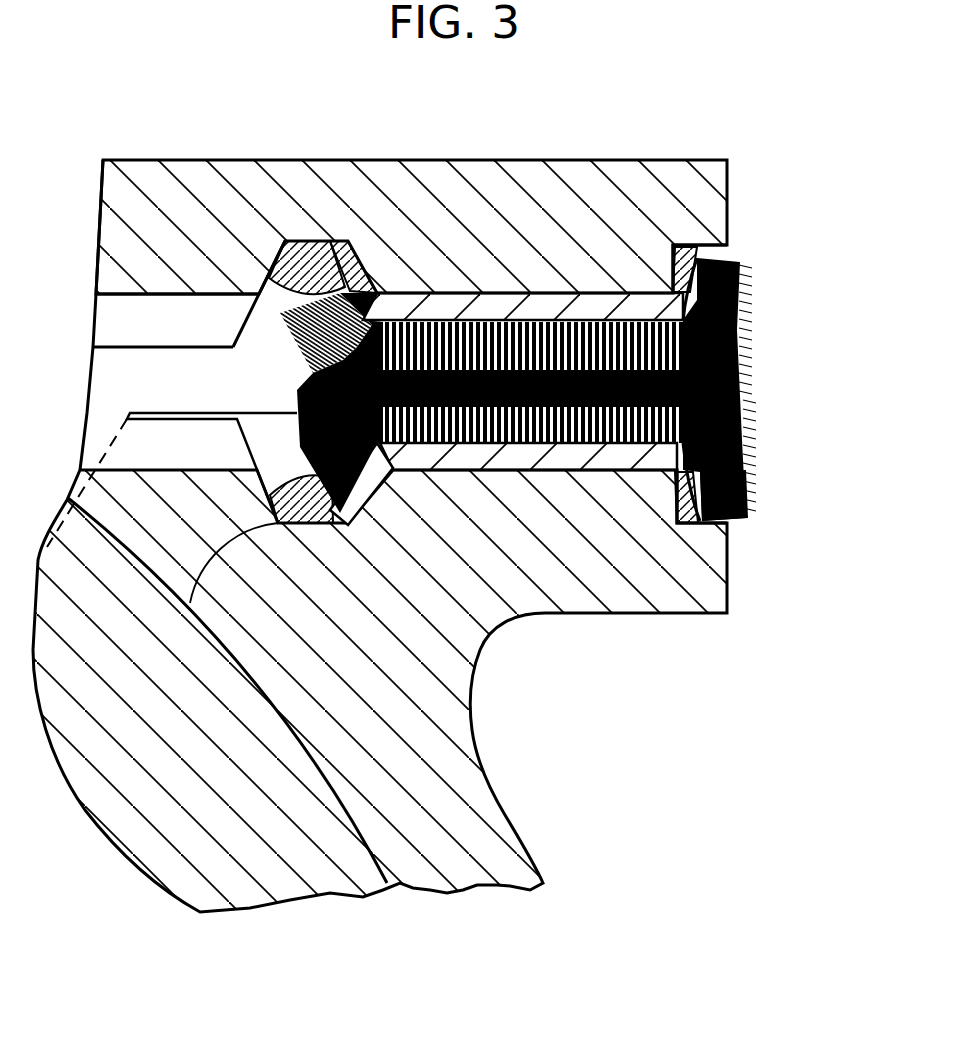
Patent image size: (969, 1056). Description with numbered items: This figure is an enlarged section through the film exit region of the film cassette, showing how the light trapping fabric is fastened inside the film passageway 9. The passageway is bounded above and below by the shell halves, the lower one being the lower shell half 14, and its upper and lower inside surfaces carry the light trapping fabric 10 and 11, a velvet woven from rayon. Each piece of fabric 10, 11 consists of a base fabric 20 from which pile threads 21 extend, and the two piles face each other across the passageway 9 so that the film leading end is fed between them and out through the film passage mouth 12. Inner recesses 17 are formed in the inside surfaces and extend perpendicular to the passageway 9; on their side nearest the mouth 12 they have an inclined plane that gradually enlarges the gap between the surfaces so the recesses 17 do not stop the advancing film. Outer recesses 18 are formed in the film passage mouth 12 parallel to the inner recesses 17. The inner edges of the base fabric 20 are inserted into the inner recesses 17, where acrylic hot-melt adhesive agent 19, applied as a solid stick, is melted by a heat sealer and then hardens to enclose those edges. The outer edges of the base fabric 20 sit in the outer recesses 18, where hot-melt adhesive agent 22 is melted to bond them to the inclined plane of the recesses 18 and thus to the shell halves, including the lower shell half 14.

The film passageway 9 is at (280, 378).
The light trapping fabric 10 is at (535, 303).
The light trapping fabric 11 is at (566, 456).
The film passage mouth 12 is at (742, 344).
The lower shell half 14 is at (480, 818).
The inner recesses 17 is at (293, 241).
The outer recesses 18 is at (728, 253).
The hot-melt adhesive agent 19 is at (317, 258).
The base fabric 20 is at (742, 470).
The pile threads 21 is at (737, 397).
The hot-melt adhesive agent 22 is at (742, 276).